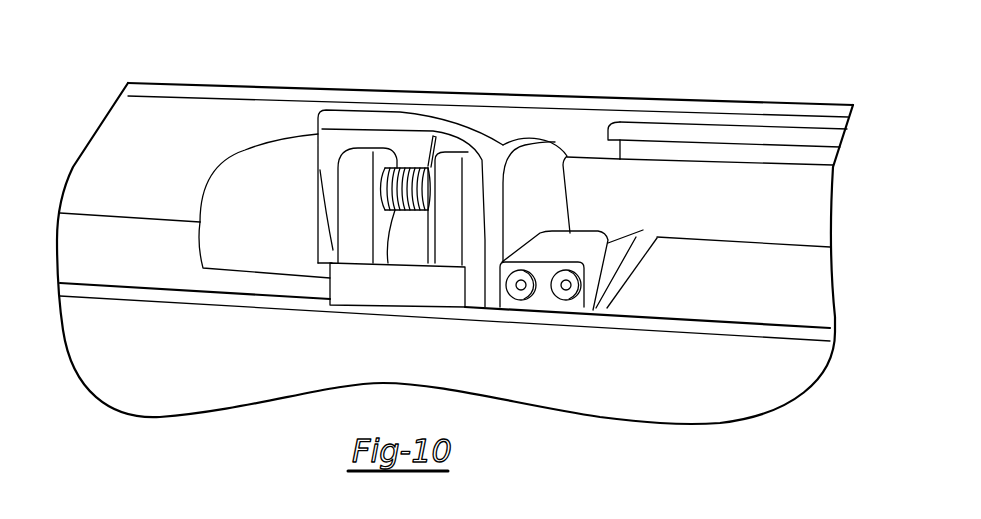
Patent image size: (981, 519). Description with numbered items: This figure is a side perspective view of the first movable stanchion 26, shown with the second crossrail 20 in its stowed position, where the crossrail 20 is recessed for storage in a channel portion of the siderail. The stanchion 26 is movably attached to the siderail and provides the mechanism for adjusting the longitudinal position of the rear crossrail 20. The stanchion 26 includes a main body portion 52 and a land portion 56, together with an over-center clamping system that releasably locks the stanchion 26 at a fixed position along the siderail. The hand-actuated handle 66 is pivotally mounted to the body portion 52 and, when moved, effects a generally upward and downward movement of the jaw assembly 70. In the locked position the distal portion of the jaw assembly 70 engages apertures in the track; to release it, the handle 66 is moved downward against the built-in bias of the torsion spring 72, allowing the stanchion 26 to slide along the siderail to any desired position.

The second crossrail 20 is at (643, 130).
The stanchion 26 is at (399, 79).
The main body portion 52 is at (247, 200).
The land portion 56 is at (617, 245).
The hand-actuated handle 66 is at (360, 127).
The jaw assembly 70 is at (356, 238).
The torsion spring 72 is at (388, 262).